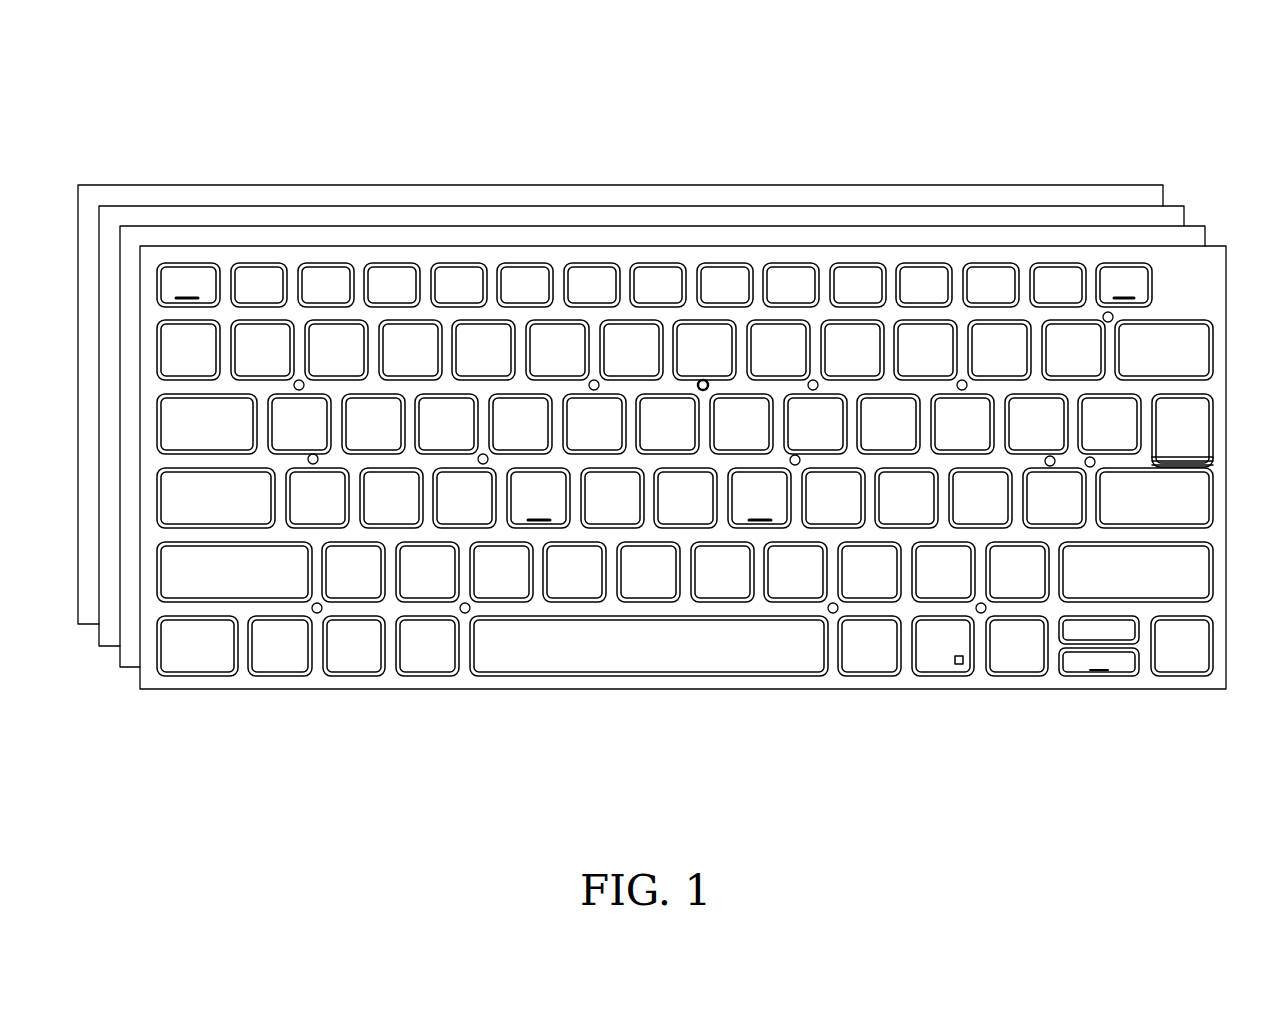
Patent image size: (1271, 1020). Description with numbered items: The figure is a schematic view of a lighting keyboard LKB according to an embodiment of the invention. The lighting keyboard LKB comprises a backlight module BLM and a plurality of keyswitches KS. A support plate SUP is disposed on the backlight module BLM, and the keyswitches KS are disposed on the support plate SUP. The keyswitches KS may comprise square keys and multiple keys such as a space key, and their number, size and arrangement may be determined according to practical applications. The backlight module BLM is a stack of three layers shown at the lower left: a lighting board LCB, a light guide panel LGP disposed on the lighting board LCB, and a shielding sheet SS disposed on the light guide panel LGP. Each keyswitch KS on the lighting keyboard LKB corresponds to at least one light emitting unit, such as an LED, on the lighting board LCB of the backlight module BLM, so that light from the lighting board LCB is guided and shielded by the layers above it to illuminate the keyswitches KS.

The lighting keyboard LKB is at (652, 441).
The backlight module BLM is at (641, 515).
The shielding sheet SS is at (129, 671).
The light guide panel LGP is at (109, 651).
The lighting board LCB is at (87, 629).
The support plate SUP is at (1102, 700).
The keyswitches KS is at (1097, 598).